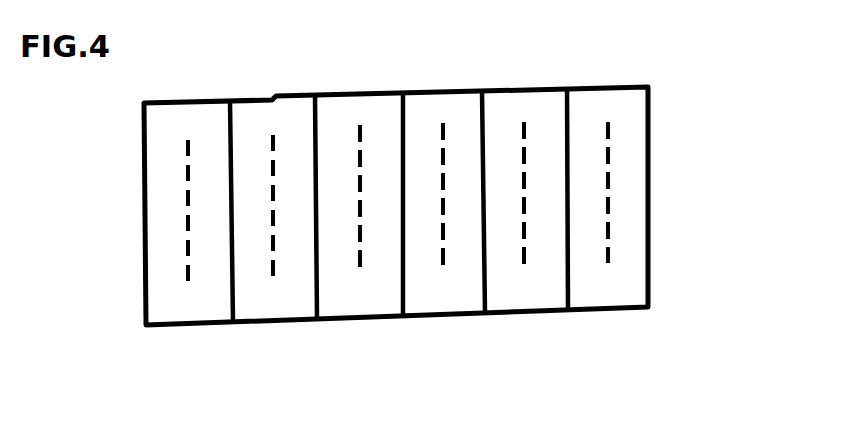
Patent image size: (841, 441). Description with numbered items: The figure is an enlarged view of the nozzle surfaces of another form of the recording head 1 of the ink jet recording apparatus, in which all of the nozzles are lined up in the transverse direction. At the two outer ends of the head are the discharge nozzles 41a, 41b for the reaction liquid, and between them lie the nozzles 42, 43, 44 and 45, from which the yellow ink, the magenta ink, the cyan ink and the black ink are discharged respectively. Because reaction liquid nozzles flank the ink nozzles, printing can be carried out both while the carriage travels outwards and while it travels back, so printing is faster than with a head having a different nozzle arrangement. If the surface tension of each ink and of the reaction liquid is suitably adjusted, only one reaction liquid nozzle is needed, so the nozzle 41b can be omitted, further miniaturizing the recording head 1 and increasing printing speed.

The recording head 1 is at (648, 223).
The discharge nozzle for the reaction liquid 41a is at (190, 253).
The yellow ink nozzle 42 is at (273, 255).
The magenta ink nozzle 43 is at (360, 260).
The cyan ink nozzle 44 is at (445, 258).
The black ink nozzle 45 is at (525, 255).
The discharge nozzle for the reaction liquid 41b is at (610, 250).